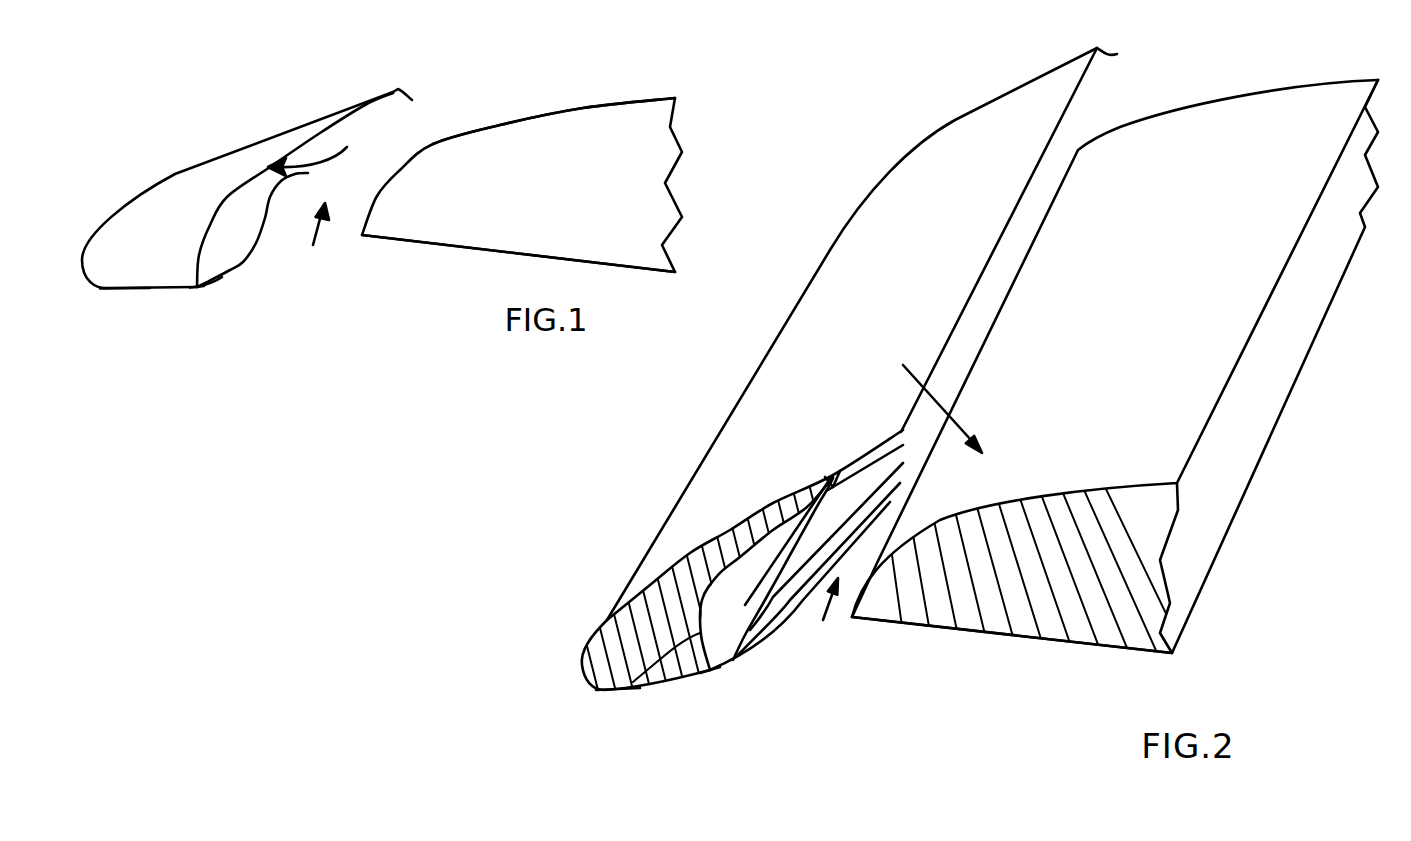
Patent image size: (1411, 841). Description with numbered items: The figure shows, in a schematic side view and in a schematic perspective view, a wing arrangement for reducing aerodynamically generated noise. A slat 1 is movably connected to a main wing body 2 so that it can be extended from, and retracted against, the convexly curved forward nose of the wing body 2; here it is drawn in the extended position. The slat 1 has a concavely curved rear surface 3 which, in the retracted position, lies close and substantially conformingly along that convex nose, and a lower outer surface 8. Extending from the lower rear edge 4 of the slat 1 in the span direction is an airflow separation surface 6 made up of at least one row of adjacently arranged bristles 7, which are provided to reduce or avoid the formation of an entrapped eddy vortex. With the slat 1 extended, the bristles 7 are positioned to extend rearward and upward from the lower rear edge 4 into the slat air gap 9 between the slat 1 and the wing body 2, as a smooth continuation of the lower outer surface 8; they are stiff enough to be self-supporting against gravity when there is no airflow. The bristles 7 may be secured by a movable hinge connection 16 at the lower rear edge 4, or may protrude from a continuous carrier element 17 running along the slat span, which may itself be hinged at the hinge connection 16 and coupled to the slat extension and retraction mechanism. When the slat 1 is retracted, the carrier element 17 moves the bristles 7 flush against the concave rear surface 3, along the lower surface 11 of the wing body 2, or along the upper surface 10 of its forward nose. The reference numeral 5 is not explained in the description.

In FIG. 1, the slat 1 is at (170, 197).
In FIG. 2, the slat 1 is at (847, 253).
In FIG. 1, the main wing body 2 is at (578, 132).
In FIG. 2, the main wing body 2 is at (1202, 118).
In FIG. 1, the concavely curved rear surface 3 is at (320, 148).
In FIG. 2, the concavely curved rear surface 3 is at (627, 687).
In FIG. 1, the lower rear edge 4 is at (197, 287).
In FIG. 2, the lower rear edge 4 is at (707, 673).
In FIG. 1, the slat trailing edge 5 is at (419, 103).
In FIG. 2, the slat trailing edge 5 is at (1109, 34).
In FIG. 1, the airflow separation surface 6 is at (243, 263).
In FIG. 2, the bristles 7 is at (747, 653).
In FIG. 1, the lower outer surface 8 is at (113, 290).
In FIG. 2, the lower outer surface 8 is at (602, 688).
In FIG. 1, the slat air gap 9 is at (316, 245).
In FIG. 2, the slat air gap 9 is at (826, 617).
In FIG. 1, the upper surface 10 is at (503, 127).
In FIG. 2, the upper surface 10 is at (927, 392).
In FIG. 1, the lower surface 11 is at (450, 248).
In FIG. 2, the lower surface 11 is at (1080, 647).
In FIG. 1, the hinge connection 16 is at (198, 287).
In FIG. 2, the hinge connection 16 is at (713, 673).
In FIG. 1, the carrier element 17 is at (213, 277).
In FIG. 2, the carrier element 17 is at (733, 663).